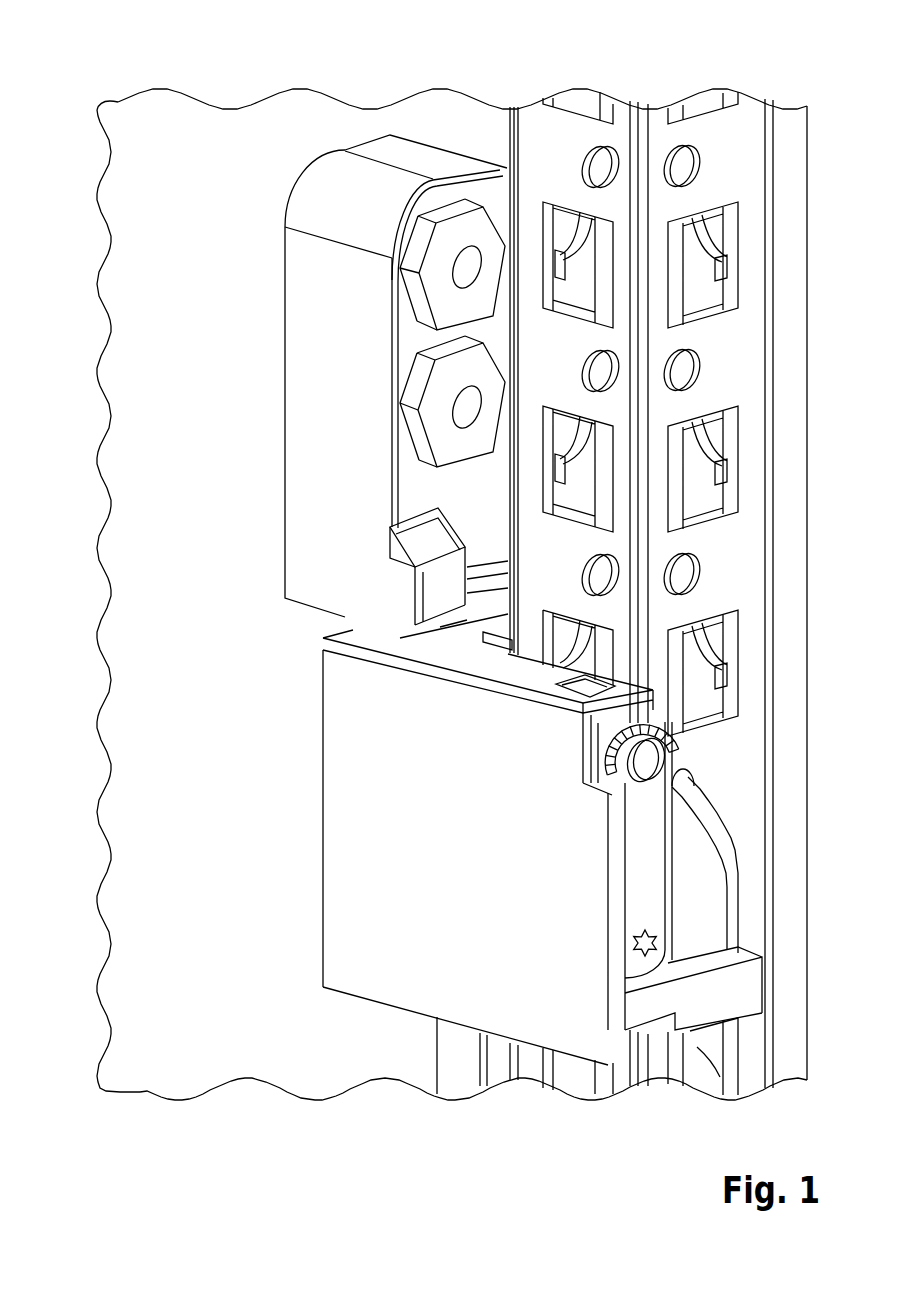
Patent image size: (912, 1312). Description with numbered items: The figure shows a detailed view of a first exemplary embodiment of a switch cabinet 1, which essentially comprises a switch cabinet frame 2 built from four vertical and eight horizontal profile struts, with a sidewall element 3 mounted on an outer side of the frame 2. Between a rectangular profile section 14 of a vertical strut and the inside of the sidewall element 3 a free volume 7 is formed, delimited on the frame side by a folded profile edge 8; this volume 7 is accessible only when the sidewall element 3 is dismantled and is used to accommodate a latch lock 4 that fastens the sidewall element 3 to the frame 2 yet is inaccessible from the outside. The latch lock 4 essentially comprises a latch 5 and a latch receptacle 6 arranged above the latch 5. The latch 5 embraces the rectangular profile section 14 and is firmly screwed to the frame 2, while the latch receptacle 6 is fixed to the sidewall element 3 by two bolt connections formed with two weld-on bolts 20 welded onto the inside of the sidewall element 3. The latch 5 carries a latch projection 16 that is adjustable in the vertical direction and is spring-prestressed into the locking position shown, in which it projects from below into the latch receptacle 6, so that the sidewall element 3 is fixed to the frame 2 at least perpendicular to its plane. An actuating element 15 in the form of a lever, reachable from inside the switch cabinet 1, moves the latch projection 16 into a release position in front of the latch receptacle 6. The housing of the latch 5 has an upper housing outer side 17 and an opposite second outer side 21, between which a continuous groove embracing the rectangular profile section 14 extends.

The switch cabinet 1 is at (99, 78).
The switch cabinet frame 2 is at (790, 127).
The sidewall element 3 is at (172, 125).
The latch lock 4 is at (276, 172).
The latch 5 is at (402, 992).
The latch receptacle 6 is at (363, 187).
The free volume 7 is at (496, 130).
The folded profile edge 8 is at (506, 135).
The rectangular profile section 14 is at (620, 127).
The actuating element 15 is at (645, 832).
The latch projection 16 is at (440, 634).
The upper housing outer side 17 is at (530, 670).
The weld-on bolts 20 is at (467, 262).
The second outer side 21 is at (358, 1014).